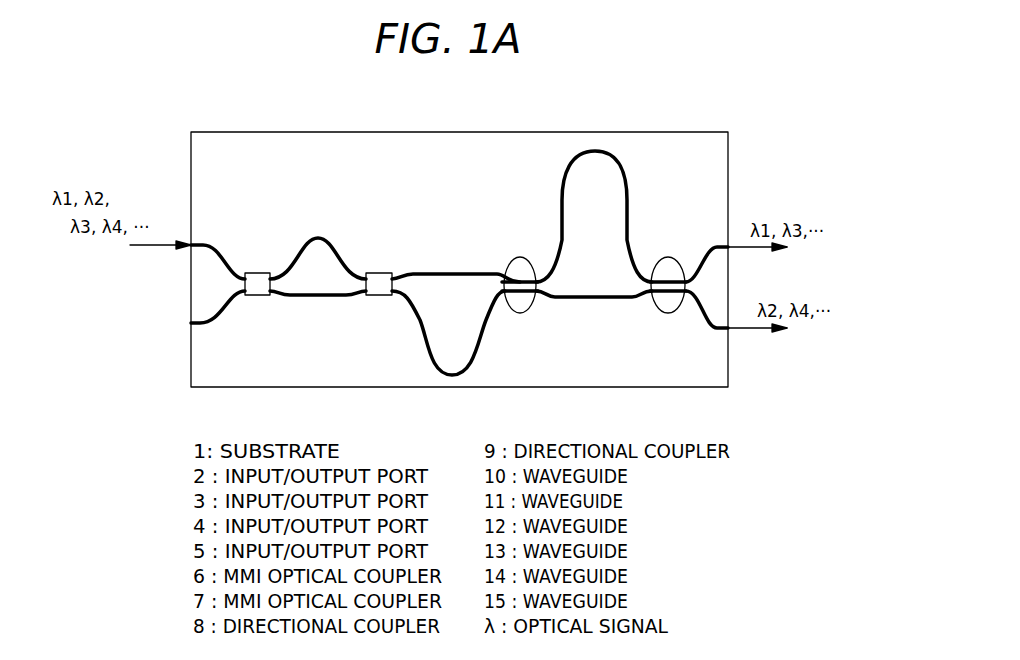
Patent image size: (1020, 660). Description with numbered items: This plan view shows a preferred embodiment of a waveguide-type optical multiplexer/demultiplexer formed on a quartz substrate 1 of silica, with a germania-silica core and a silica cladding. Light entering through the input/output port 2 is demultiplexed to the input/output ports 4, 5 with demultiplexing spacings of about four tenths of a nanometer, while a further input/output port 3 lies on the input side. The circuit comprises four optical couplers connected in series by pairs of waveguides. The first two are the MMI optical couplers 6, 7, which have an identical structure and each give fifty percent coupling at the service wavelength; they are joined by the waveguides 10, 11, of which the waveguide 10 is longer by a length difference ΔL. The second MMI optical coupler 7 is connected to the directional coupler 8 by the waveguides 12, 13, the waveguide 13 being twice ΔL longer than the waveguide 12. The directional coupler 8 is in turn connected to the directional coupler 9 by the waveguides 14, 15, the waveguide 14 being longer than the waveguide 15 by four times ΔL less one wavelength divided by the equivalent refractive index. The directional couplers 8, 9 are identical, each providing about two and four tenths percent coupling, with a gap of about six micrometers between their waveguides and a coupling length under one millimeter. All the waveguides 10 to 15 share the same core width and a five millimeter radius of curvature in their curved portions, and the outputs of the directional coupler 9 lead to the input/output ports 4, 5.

The substrate 1 is at (210, 378).
The input/output port 2 is at (191, 245).
The input/output port 3 is at (191, 323).
The input/output port 4 is at (728, 247).
The input/output port 5 is at (728, 328).
The MMI optical coupler 6 is at (258, 297).
The MMI optical coupler 7 is at (385, 297).
The directional coupler 8 is at (528, 313).
The directional coupler 9 is at (668, 313).
The waveguide 10 is at (318, 238).
The waveguide 11 is at (318, 297).
The waveguide 12 is at (448, 274).
The waveguide 13 is at (478, 362).
The waveguide 14 is at (620, 170).
The waveguide 15 is at (597, 297).